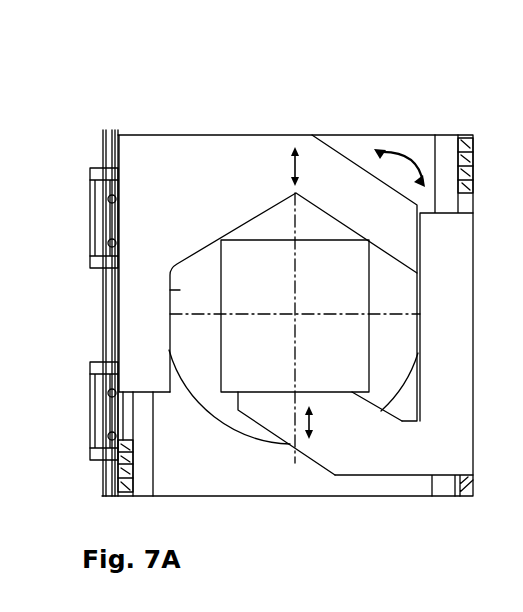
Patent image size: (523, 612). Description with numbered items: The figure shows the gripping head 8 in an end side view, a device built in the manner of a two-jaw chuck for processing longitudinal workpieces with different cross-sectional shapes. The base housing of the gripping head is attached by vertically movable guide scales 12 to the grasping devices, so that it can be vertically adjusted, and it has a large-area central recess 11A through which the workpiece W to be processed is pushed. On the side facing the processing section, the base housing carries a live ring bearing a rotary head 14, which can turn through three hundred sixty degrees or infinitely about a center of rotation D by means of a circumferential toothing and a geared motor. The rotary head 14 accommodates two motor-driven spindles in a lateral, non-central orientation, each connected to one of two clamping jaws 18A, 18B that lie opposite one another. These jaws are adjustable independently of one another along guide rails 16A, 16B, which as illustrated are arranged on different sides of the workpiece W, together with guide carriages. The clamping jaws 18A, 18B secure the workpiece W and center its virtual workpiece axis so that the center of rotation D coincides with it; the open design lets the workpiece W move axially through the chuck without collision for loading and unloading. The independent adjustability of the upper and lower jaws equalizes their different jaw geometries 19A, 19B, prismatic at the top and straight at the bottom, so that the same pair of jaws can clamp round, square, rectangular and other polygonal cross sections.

The gripping head 8 is at (155, 107).
The guide scales 12 is at (98, 228).
The rotary head 14 is at (408, 153).
The guide rail 16A is at (143, 478).
The guide rail 16B is at (446, 152).
The clamping jaw 18A is at (247, 188).
The clamping jaw 18B is at (432, 456).
The jaw geometry 19A is at (316, 204).
The jaw geometry 19B is at (316, 388).
The central recess 11A is at (233, 429).
The center of rotation D is at (296, 314).
The workpiece W is at (369, 352).